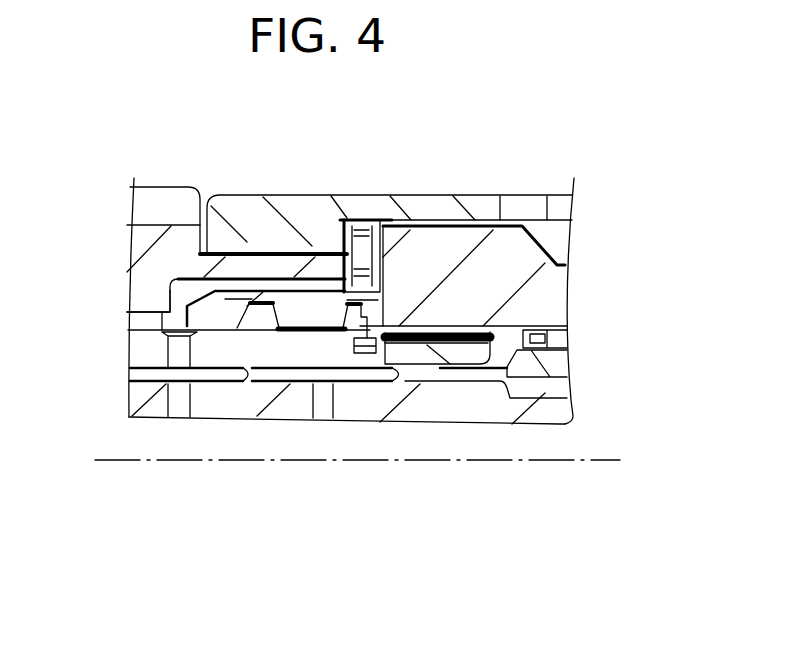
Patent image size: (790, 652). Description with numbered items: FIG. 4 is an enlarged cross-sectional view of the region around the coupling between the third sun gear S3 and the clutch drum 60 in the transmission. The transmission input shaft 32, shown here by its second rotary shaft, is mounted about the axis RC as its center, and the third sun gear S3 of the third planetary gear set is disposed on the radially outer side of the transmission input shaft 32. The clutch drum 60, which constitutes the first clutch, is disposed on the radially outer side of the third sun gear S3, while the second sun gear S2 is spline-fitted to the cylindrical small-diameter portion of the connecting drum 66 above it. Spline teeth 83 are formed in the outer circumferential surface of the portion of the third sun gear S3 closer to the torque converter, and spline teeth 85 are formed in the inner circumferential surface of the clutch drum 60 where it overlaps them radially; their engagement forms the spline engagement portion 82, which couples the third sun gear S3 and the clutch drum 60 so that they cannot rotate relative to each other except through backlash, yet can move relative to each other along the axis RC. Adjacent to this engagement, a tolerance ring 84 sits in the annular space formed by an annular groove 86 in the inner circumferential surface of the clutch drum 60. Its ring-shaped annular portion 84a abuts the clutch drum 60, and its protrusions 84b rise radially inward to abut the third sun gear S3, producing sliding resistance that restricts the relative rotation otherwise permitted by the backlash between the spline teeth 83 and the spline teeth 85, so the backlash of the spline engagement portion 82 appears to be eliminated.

The second sun gear S2 is at (160, 251).
The third sun gear S3 is at (145, 351).
The connecting drum 66 is at (355, 208).
The annular groove 86 is at (330, 307).
The clutch drum 60 is at (547, 303).
The tolerance ring 84 is at (211, 343).
The annular portion 84a is at (264, 302).
The protrusions 84b is at (295, 331).
The spline teeth 85 is at (360, 345).
The spline teeth 83 is at (393, 345).
The spline engagement portion 82 is at (440, 366).
The transmission input shaft 32 is at (222, 393).
The axis RC is at (127, 463).